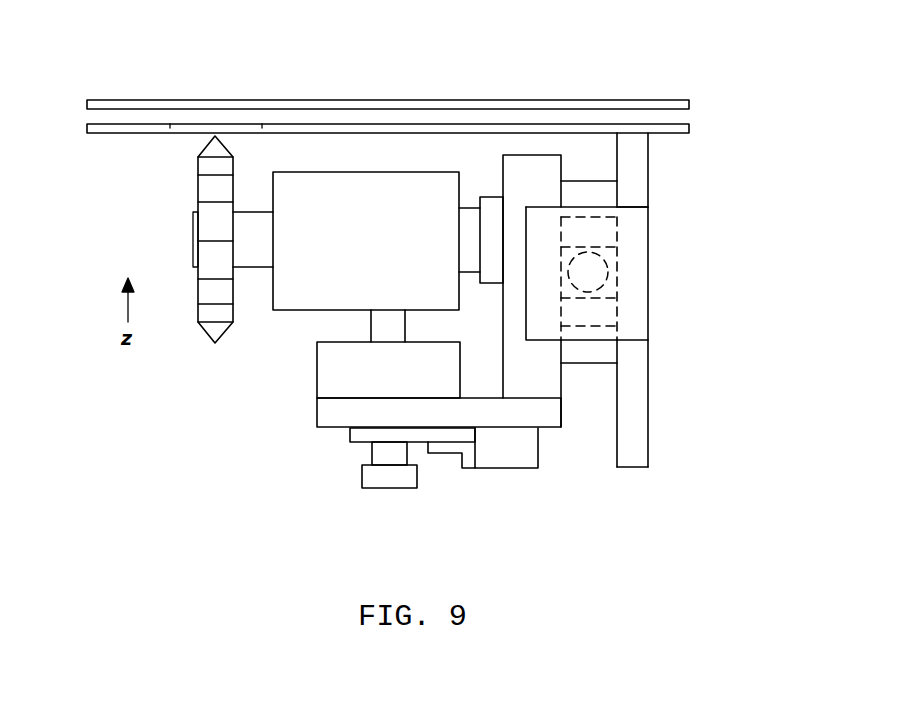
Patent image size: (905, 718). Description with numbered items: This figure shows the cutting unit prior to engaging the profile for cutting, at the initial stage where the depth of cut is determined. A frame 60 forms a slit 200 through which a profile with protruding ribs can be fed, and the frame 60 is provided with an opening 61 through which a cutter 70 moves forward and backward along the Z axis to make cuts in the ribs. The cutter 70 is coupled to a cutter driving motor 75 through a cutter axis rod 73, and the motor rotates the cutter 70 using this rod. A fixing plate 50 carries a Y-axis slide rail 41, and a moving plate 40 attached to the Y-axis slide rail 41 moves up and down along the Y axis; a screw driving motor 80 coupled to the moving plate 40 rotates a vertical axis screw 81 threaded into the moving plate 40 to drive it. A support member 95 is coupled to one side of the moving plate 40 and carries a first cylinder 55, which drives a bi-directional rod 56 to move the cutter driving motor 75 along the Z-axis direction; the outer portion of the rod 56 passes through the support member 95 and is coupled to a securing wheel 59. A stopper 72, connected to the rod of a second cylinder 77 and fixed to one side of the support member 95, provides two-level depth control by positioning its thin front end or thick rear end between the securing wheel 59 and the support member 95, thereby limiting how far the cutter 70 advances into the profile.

The slit 200 is at (88, 117).
The opening 61 is at (197, 130).
The cutter 70 is at (205, 204).
The cutter axis rod 73 is at (250, 241).
The cutter driving motor 75 is at (294, 299).
The bi-directional rod 56 is at (382, 323).
The first cylinder 55 is at (330, 375).
The securing wheel 59 is at (380, 481).
The stopper 72 is at (415, 432).
The second cylinder 77 is at (517, 448).
The support member 95 is at (547, 417).
The fixing plate 50 is at (645, 388).
The screw driving motor 80 is at (527, 322).
The vertical axis screw 81 is at (590, 270).
The moving plate 40 is at (535, 153).
The Y-axis slide rail 41 is at (607, 193).
The frame 60 is at (689, 128).